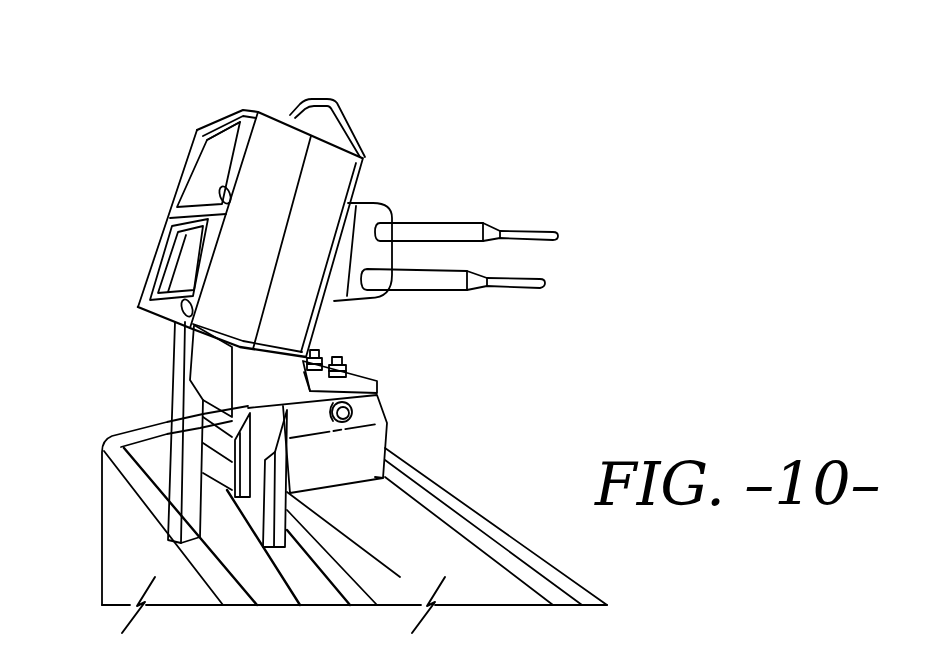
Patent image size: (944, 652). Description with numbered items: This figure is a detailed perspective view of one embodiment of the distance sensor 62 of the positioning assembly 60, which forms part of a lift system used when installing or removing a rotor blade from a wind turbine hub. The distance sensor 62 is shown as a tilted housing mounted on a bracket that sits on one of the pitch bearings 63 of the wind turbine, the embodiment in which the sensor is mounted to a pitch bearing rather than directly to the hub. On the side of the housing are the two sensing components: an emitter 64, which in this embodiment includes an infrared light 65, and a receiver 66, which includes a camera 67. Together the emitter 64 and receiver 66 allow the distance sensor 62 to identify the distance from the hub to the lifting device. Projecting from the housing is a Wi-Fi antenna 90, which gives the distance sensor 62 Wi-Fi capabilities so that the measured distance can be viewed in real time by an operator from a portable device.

The positioning assembly 60 is at (126, 92).
The distance sensor 62 is at (283, 181).
The pitch bearing 63 is at (423, 540).
The emitter 64 is at (176, 287).
The infrared light 65 is at (189, 256).
The receiver 66 is at (206, 136).
The camera 67 is at (208, 173).
The Wi-Fi antenna 90 is at (507, 282).